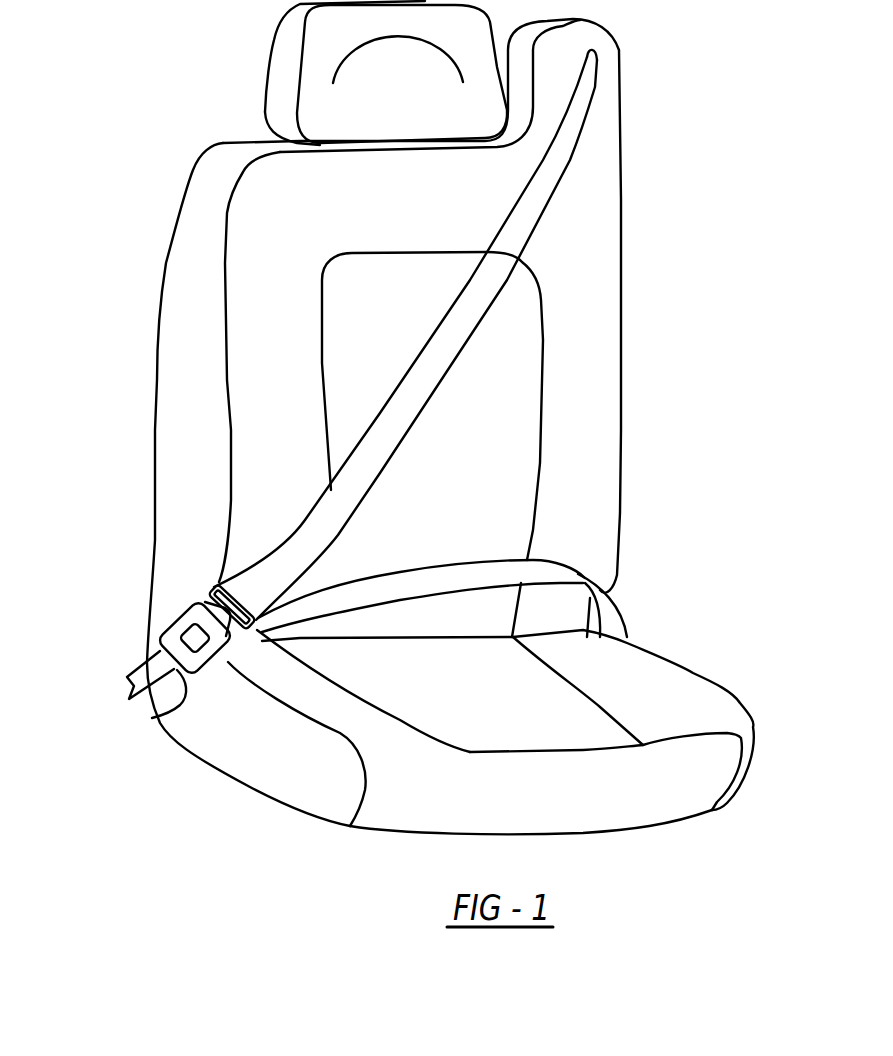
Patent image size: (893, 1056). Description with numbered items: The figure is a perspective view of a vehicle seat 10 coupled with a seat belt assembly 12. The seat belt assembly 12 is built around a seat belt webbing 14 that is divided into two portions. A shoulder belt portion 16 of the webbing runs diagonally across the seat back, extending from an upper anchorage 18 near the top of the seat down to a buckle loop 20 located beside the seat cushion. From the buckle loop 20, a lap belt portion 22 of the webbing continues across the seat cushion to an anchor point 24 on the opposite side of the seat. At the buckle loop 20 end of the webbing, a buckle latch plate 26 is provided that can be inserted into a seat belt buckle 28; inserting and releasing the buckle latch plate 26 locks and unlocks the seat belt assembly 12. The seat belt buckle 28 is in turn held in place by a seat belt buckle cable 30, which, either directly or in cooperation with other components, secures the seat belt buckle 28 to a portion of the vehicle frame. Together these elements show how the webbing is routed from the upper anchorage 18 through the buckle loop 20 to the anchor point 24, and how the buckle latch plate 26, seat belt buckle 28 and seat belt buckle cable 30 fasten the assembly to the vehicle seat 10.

The vehicle seat 10 is at (702, 170).
The seat belt assembly 12 is at (402, 358).
The seat belt webbing 14 is at (356, 447).
The shoulder belt portion 16 is at (483, 316).
The upper anchorage 18 is at (597, 83).
The buckle loop 20 is at (217, 586).
The lap belt portion 22 is at (557, 560).
The anchor point 24 is at (627, 637).
The buckle latch plate 26 is at (233, 672).
The seat belt buckle 28 is at (190, 682).
The seat belt buckle cable 30 is at (140, 664).